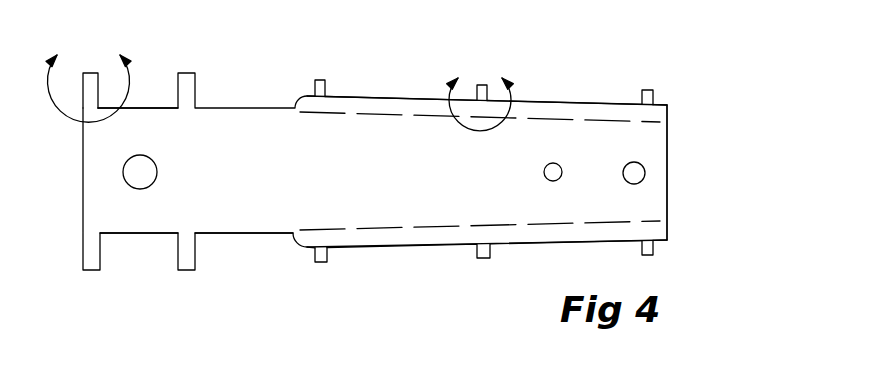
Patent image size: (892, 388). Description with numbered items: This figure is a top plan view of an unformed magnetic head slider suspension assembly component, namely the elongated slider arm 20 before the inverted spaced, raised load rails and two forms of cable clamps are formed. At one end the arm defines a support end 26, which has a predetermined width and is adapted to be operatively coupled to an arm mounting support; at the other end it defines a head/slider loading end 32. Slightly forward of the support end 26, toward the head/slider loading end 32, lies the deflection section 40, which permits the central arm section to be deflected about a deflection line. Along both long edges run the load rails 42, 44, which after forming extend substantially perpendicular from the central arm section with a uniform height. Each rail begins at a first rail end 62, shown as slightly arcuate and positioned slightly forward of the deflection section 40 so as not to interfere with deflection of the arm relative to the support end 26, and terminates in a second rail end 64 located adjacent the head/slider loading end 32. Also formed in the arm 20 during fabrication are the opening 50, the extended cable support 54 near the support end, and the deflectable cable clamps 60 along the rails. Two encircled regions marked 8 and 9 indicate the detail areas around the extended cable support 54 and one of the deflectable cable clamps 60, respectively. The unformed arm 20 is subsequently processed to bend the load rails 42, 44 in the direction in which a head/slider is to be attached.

The detail circle FIG. 8 is at (88, 77).
The detail circle FIG. 9 is at (480, 92).
The elongated slider arm 20 is at (528, 272).
The support end 26 is at (155, 120).
The head/slider loading end 32 is at (668, 148).
The deflection section 40 is at (237, 213).
The load rail 42 is at (375, 240).
The load rail 44 is at (343, 102).
The opening 50 is at (142, 180).
The extended cable support 54 is at (90, 80).
The deflectable cable clamp 60 is at (508, 70).
The first rail end 62 is at (300, 95).
The second rail end 64 is at (667, 232).